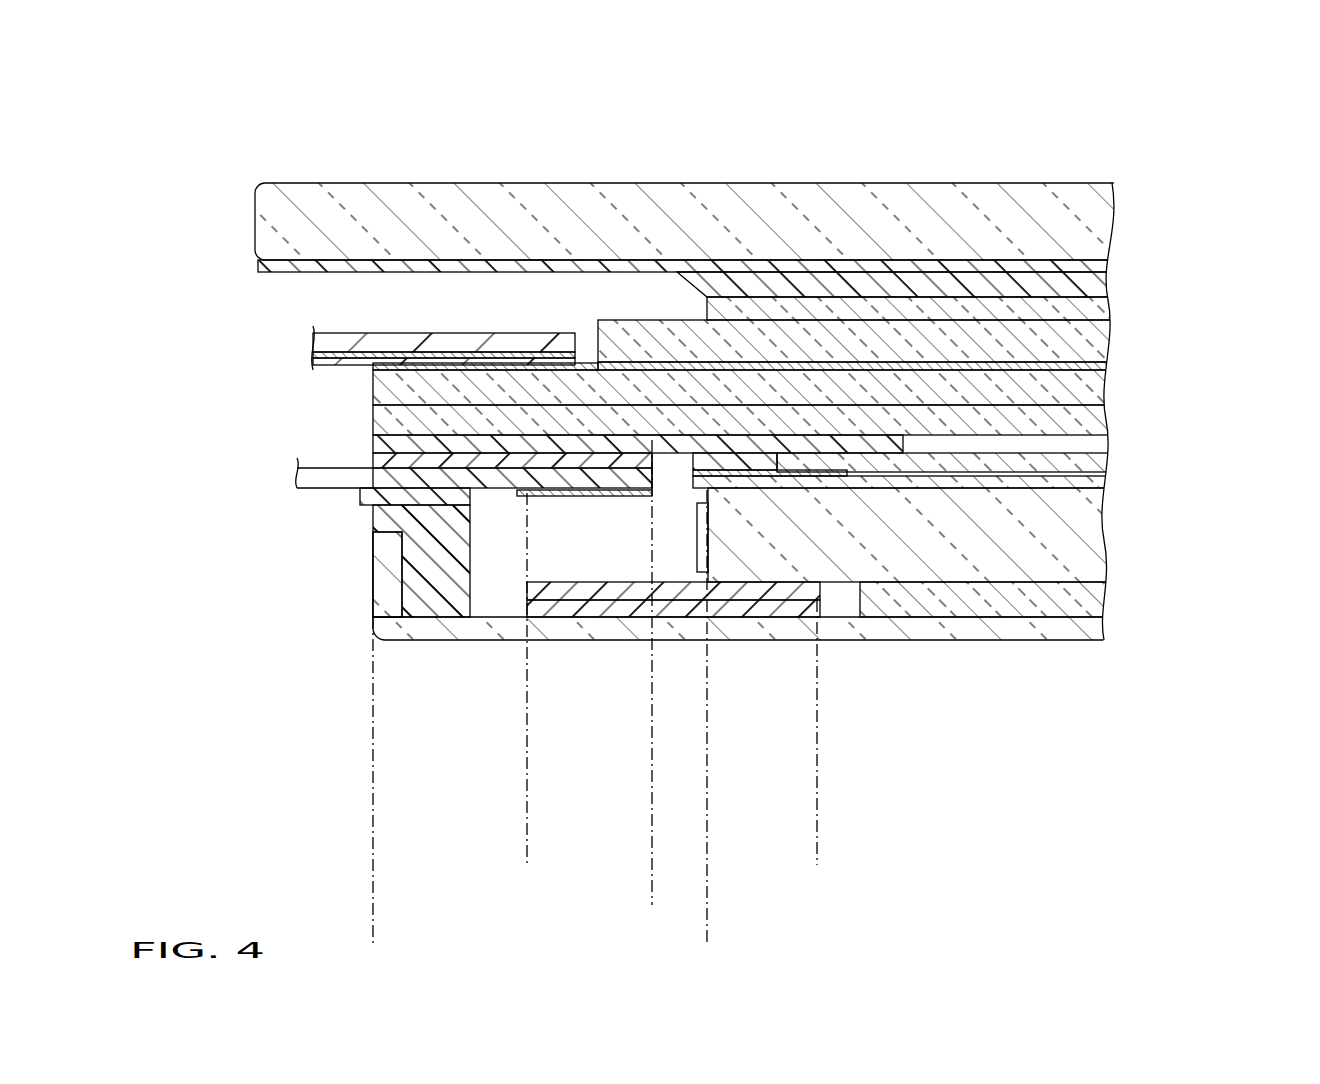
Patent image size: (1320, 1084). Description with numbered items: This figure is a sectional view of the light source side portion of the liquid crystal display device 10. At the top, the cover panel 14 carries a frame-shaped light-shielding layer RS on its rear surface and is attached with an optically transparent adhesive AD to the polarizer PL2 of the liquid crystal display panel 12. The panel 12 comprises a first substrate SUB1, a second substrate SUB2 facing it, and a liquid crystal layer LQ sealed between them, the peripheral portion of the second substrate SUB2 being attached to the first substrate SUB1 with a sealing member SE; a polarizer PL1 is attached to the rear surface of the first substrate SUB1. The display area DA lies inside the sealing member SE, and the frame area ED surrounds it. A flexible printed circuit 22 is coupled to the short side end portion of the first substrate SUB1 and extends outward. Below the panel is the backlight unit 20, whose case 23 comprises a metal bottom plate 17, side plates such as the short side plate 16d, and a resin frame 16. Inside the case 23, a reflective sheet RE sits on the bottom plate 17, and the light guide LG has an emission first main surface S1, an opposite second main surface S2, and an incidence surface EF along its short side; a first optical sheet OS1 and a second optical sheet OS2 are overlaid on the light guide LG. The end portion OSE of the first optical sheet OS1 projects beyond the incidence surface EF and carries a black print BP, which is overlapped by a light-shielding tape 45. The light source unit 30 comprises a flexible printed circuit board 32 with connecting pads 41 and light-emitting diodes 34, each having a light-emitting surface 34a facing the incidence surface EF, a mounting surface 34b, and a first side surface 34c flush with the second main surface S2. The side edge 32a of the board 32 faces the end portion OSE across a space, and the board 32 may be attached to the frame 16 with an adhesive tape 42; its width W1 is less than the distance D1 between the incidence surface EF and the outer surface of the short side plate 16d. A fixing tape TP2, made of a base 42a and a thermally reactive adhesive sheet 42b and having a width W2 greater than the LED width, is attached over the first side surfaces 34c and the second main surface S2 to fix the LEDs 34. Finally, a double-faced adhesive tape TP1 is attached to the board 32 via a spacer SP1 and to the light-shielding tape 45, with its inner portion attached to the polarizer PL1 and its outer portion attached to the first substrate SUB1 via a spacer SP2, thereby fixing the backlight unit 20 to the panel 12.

The liquid crystal display device 10 is at (342, 122).
The liquid crystal display panel 12 is at (822, 284).
The cover panel 14 is at (497, 200).
The frame 16 is at (370, 561).
The short side plate 16d is at (385, 557).
The bottom plate 17 is at (913, 628).
The backlight unit 20 is at (738, 637).
The flexible printed circuit 22 is at (347, 333).
The case 23 is at (749, 682).
The light source unit 30 is at (545, 660).
The flexible printed circuit board 32 is at (498, 388).
The side edge 32a is at (657, 482).
The light-emitting diode 34 is at (645, 668).
The light-emitting surface 34a is at (712, 545).
The mounting surface 34b is at (528, 517).
The first side surface 34c is at (585, 605).
The connecting pad 41 is at (540, 493).
The adhesive tape 42 is at (365, 497).
The base 42a is at (590, 612).
The adhesive sheet 42b is at (548, 600).
The light-shielding tape 45 is at (733, 458).
The adhesive layer AD is at (1100, 282).
The polarizer PL1 is at (786, 420).
The polarizer PL2 is at (1103, 312).
The first substrate SUB1 is at (1100, 393).
The second substrate SUB2 is at (1103, 340).
The liquid crystal layer LQ is at (1100, 366).
The sealing member SE is at (848, 365).
The light-shielding layer RS is at (632, 272).
The first optical sheet OS1 is at (1100, 482).
The second optical sheet OS2 is at (1100, 462).
The end portion OSE is at (750, 472).
The light guide LG is at (1110, 548).
The reflective sheet RE is at (985, 605).
The first main surface S1 is at (1008, 585).
The second main surface S2 is at (1055, 580).
The incidence surface EF is at (680, 605).
The black print BP is at (787, 490).
The double-faced adhesive tape TP1 is at (610, 440).
The fixing tape TP2 is at (673, 707).
The spacer SP1 is at (447, 463).
The spacer SP2 is at (537, 417).
The frame area ED is at (957, 650).
The display area DA is at (959, 95).
The width of the FPC W1 is at (375, 895).
The width of the fixing tape W2 is at (529, 853).
The distance D1 is at (375, 933).